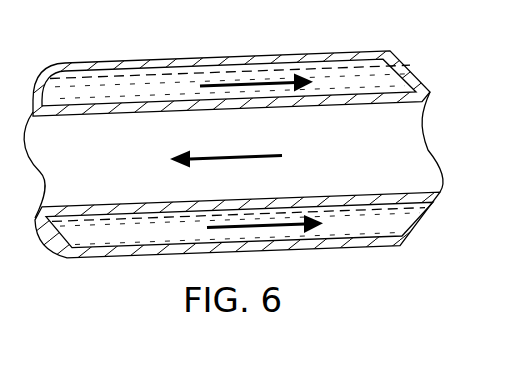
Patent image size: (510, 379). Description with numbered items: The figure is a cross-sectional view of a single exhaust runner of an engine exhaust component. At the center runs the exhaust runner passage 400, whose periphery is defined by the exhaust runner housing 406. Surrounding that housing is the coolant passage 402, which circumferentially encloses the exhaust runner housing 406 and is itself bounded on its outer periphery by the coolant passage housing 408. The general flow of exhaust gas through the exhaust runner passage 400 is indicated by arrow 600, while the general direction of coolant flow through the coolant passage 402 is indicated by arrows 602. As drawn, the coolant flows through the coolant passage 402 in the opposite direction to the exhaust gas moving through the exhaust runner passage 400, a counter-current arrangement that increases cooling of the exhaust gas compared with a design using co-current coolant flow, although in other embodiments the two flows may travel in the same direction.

The exhaust runner passage 400 is at (355, 167).
The coolant passage 402 is at (372, 88).
The exhaust runner housing 406 is at (115, 210).
The coolant passage housing 408 is at (148, 68).
The arrow 600 is at (231, 156).
The arrows 602 is at (223, 82).